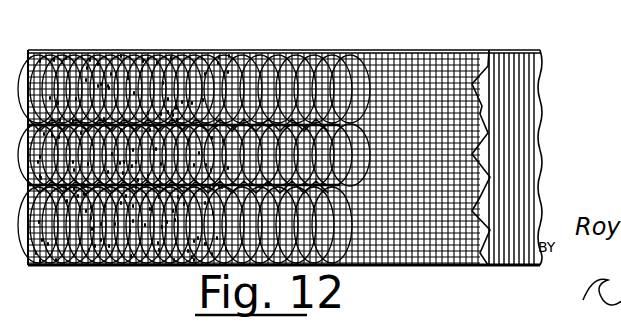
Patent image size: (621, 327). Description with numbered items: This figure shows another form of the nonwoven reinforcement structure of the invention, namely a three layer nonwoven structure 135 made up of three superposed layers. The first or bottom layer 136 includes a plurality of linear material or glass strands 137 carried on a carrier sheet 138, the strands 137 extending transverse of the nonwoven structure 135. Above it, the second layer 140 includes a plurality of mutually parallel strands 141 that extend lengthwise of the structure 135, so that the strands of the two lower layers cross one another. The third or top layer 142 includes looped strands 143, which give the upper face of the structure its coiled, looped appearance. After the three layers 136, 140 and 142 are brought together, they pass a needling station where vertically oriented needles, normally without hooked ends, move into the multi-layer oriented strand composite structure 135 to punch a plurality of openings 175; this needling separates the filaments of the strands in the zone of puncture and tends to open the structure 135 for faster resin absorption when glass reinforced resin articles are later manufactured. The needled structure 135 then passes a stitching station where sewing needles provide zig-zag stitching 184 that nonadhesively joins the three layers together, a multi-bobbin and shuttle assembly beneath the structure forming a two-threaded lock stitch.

The three layer nonwoven structure 135 is at (288, 7).
The first or bottom layer 136 is at (522, 45).
The glass strands 137 is at (527, 73).
The carrier sheet 138 is at (508, 268).
The second layer 140 is at (414, 25).
The mutually parallel strands 141 is at (427, 72).
The third or top layer 142 is at (226, 52).
The looped strands 143 is at (322, 225).
The openings 175 is at (165, 235).
The zig-zag stitching 184 is at (110, 56).